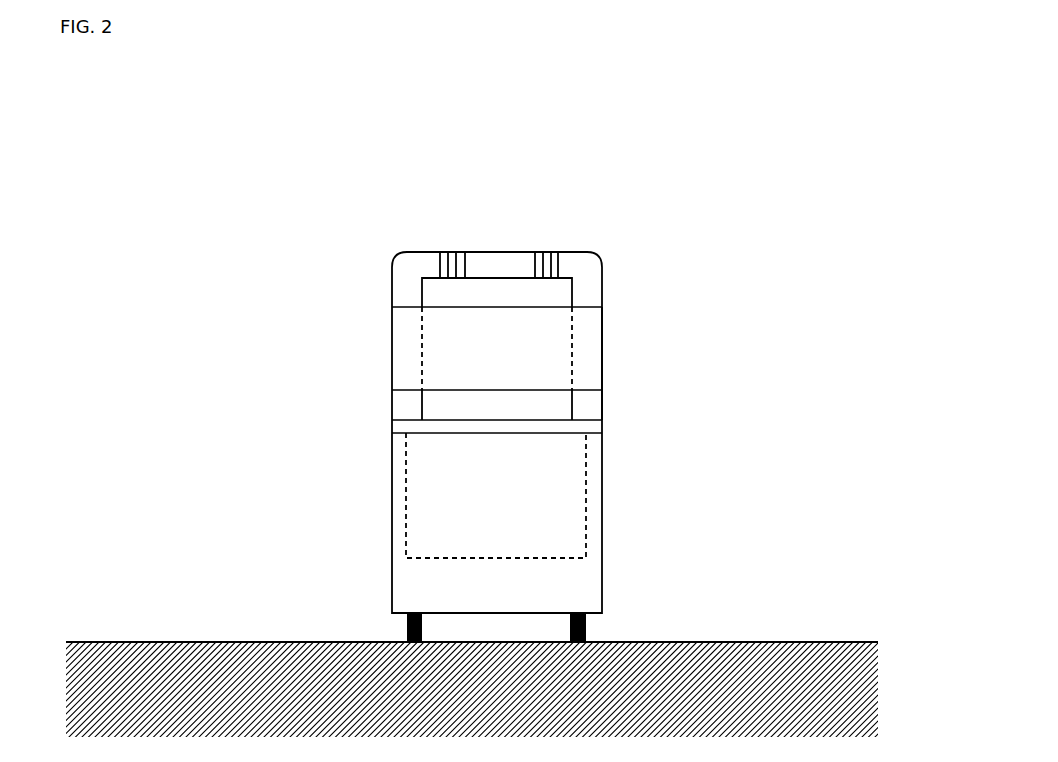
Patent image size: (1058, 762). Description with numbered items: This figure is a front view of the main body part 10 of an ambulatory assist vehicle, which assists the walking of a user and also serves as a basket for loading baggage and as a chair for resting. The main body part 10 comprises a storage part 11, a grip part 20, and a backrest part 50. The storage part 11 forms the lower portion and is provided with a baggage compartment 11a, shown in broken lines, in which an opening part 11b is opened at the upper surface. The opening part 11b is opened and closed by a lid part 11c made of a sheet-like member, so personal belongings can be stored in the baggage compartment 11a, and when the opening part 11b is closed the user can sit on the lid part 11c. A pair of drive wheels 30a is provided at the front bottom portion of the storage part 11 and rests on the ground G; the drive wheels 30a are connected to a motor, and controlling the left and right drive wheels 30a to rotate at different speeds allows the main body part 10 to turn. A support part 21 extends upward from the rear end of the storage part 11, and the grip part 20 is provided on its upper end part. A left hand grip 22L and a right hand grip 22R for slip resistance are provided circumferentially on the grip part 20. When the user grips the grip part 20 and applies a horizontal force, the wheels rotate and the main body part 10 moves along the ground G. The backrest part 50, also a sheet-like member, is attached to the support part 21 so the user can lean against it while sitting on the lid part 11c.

The main body part 10 is at (241, 118).
The grip part 20 is at (504, 303).
The support part 21 is at (586, 405).
The right hand grip 22R is at (448, 243).
The left hand grip 22L is at (545, 243).
The backrest part 50 is at (405, 352).
The storage part 11 is at (521, 518).
The baggage compartment 11a is at (570, 500).
The opening part 11b is at (505, 437).
The lid part 11c is at (405, 430).
The drive wheels 30a is at (405, 628).
The ground G is at (169, 642).